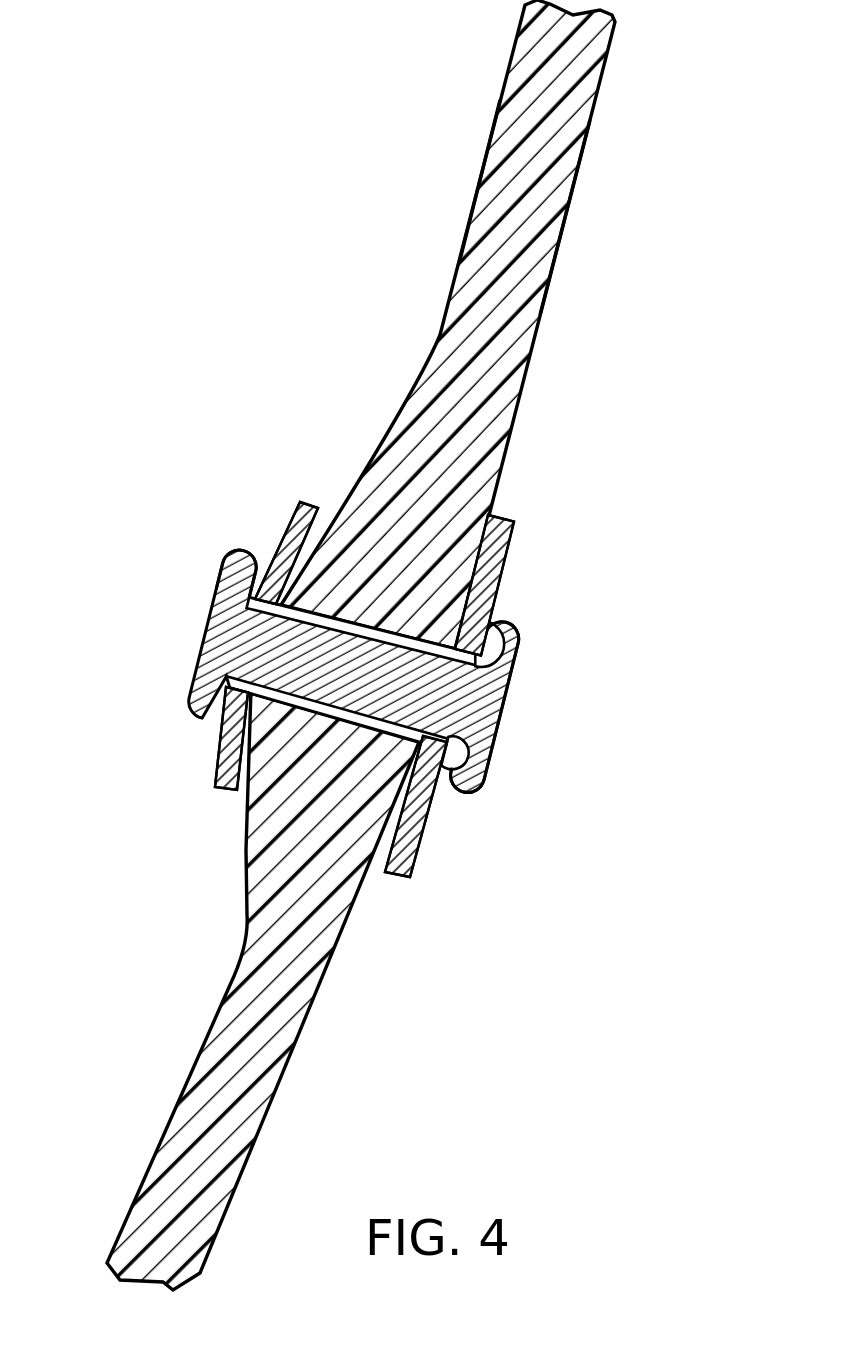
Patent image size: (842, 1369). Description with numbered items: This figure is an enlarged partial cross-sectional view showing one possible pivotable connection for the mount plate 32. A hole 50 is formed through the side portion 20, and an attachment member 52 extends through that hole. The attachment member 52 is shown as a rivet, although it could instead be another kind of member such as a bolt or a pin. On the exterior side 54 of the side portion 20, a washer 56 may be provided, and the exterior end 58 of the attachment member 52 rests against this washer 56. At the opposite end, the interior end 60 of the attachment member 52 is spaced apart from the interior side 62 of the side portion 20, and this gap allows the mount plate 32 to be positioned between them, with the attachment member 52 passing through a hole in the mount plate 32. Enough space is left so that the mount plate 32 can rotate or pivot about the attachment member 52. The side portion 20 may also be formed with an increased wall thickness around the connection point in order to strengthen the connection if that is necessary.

The side portion 20 is at (605, 67).
The mount plate 32 is at (303, 500).
The hole 50 is at (318, 716).
The attachment member 52 is at (162, 645).
The exterior side 54 is at (578, 335).
The washer 56 is at (503, 553).
The exterior end 58 is at (506, 696).
The interior end 60 is at (226, 590).
The interior side 62 is at (440, 181).